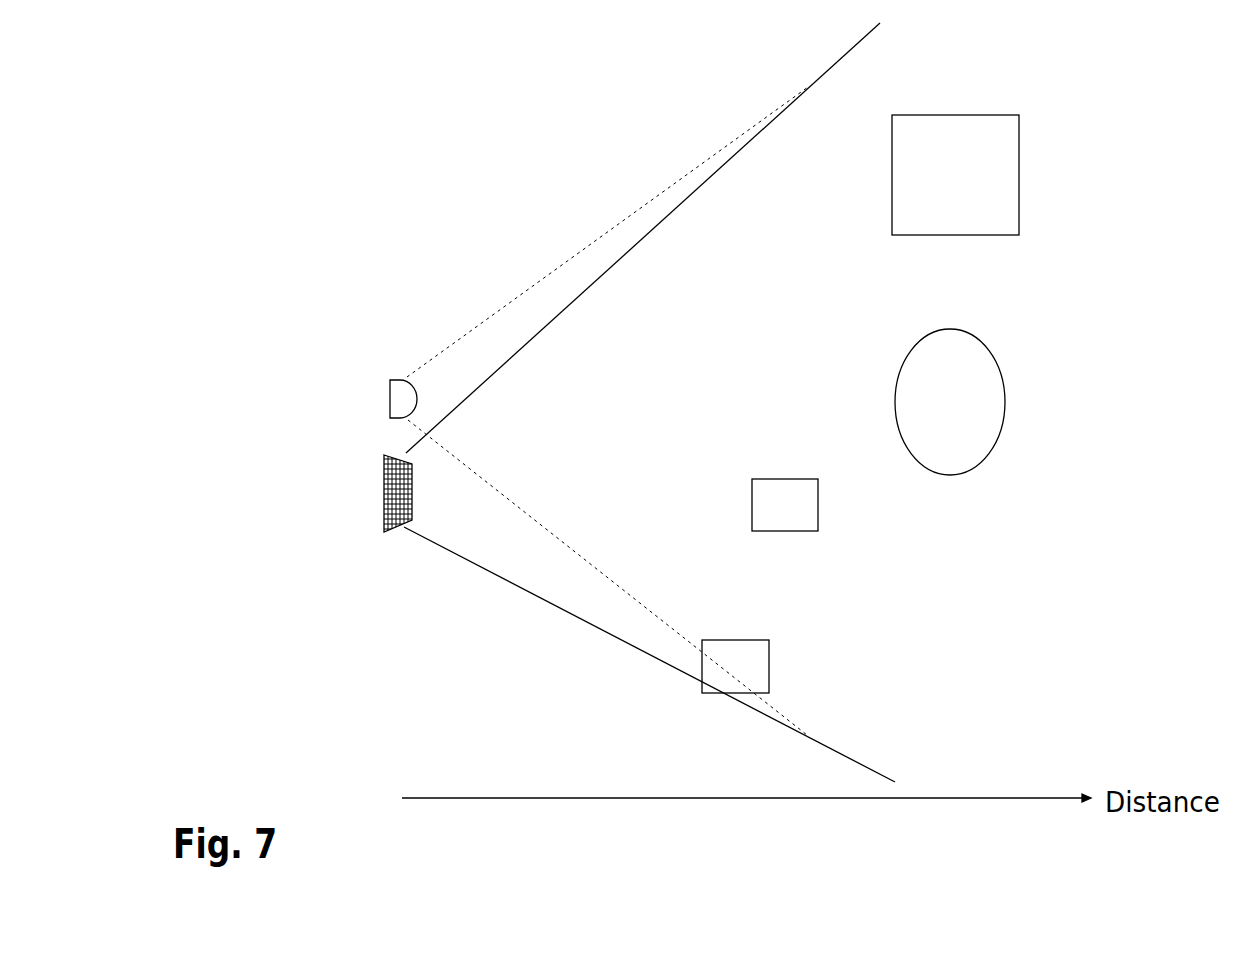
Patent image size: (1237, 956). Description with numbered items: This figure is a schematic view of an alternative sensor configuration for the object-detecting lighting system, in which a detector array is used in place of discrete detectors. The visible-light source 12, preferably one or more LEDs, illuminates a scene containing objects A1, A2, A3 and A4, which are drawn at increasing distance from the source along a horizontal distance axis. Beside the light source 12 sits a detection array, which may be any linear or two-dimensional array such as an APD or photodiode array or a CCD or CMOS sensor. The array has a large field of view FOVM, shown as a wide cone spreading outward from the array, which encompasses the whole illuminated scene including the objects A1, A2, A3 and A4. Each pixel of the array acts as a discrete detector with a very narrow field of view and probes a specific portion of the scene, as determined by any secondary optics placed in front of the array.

The visible-light source 12 is at (390, 398).
The field of view FOVM is at (580, 622).
The object A1 is at (703, 683).
The object A2 is at (818, 519).
The object A3 is at (1000, 428).
The object A4 is at (1019, 194).